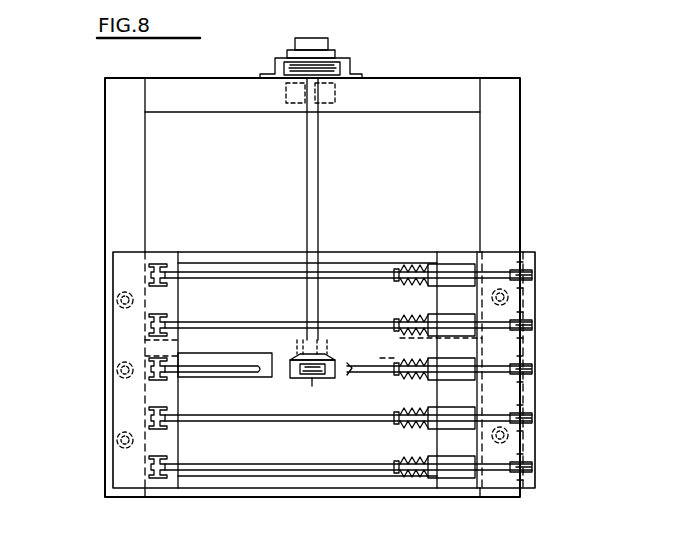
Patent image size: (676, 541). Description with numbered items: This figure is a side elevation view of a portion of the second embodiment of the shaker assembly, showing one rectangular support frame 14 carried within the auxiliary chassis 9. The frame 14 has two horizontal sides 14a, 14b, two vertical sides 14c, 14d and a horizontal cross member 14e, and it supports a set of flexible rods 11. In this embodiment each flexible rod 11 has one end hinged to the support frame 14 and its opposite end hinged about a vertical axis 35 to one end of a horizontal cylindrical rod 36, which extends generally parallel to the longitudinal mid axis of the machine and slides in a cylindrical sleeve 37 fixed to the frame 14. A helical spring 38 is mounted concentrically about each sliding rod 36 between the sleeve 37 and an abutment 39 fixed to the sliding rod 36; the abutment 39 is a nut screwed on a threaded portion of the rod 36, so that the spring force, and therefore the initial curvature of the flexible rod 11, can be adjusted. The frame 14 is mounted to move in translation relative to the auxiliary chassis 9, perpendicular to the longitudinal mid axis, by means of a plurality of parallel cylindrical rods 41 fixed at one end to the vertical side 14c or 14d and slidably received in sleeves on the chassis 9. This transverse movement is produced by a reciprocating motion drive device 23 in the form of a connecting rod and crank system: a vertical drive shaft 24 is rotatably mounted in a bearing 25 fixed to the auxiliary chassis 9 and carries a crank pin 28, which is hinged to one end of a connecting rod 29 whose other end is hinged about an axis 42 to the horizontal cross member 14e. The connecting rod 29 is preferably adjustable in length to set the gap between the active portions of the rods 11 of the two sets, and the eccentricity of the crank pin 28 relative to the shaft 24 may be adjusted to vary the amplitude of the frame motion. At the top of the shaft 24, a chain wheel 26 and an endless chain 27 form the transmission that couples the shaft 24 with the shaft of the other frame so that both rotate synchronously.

The auxiliary chassis 9 is at (522, 156).
The flexible rod 11 is at (234, 322).
The support frame 14 is at (258, 250).
The horizontal side of the support frame 14a is at (208, 251).
The horizontal side of the support frame 14b is at (286, 482).
The vertical side of the support frame 14c is at (115, 342).
The vertical side of the support frame 14d is at (537, 345).
The horizontal cross member 14e is at (262, 362).
The reciprocating motion drive device 23 is at (320, 386).
The drive shaft 24 is at (320, 162).
The bearing 25 is at (292, 104).
The chain wheel 26 is at (326, 48).
The endless chain 27 is at (340, 68).
The crank pin 28 is at (297, 374).
The connecting rod 29 is at (312, 380).
The vertical axis 35 is at (532, 268).
The horizontal cylindrical rod 36 is at (514, 263).
The cylindrical sleeve 37 is at (456, 264).
The helical spring 38 is at (414, 262).
The abutment 39 is at (397, 266).
The parallel cylindrical rod 41 is at (117, 300).
The axis 42 is at (326, 378).